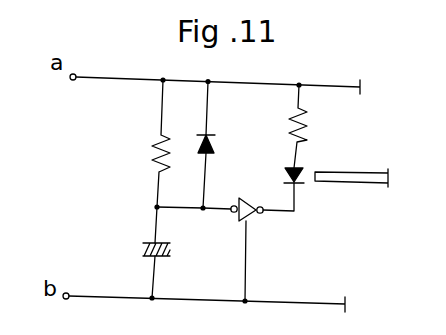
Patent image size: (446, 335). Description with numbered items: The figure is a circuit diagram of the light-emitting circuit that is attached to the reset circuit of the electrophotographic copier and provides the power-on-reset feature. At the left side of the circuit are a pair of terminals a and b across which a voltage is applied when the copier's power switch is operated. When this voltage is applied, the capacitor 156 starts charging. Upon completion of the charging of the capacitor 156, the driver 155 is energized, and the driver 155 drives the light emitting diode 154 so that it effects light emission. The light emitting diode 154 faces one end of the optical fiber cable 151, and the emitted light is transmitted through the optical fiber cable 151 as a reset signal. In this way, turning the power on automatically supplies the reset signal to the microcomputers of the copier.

The optical fiber cable 151 is at (362, 172).
The light emitting diode 154 is at (298, 178).
The driver 155 is at (251, 218).
The capacitor 156 is at (147, 242).